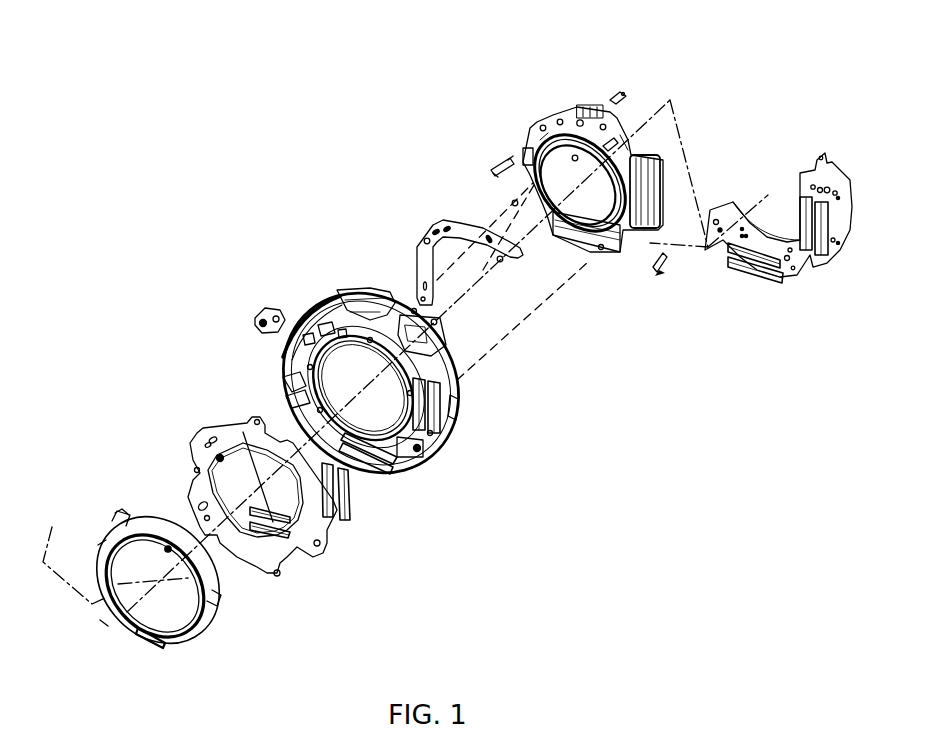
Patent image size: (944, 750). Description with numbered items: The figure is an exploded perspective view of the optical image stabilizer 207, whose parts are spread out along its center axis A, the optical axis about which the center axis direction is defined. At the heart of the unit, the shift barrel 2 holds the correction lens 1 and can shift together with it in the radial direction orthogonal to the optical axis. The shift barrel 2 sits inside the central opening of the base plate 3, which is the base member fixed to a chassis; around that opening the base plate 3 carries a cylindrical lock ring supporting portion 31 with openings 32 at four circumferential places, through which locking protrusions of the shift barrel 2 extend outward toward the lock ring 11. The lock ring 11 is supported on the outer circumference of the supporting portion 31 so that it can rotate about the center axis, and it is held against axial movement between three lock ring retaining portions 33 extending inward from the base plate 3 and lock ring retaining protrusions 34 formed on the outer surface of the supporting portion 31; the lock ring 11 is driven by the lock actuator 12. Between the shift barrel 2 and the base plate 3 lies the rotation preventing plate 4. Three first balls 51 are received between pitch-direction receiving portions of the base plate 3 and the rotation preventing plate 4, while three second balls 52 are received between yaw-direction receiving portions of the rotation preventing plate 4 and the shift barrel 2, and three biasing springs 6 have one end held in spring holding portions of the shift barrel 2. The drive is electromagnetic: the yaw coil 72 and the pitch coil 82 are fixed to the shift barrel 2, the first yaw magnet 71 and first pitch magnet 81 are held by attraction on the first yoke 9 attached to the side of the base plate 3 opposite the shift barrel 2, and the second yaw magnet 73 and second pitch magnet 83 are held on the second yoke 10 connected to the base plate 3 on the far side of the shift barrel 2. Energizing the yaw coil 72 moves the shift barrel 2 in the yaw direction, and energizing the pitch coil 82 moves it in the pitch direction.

The optical image stabilizer 207 is at (418, 100).
The center axis A is at (113, 545).
The correction lens 1 is at (588, 212).
The shift barrel 2 is at (548, 118).
The base plate 3 is at (363, 295).
The rotation preventing plate 4 is at (455, 233).
The biasing springs 6 is at (617, 92).
The first yoke 9 is at (325, 557).
The second yoke 10 is at (827, 177).
The lock ring 11 is at (215, 607).
The lock actuator 12 is at (275, 320).
The lock ring supporting portion 31 is at (330, 300).
The openings 32 is at (457, 382).
The lock ring retaining portions 33 is at (290, 350).
The lock ring retaining protrusions 34 is at (452, 428).
The first balls 51 is at (413, 262).
The second balls 52 is at (512, 203).
The first yaw magnet 71 is at (342, 497).
The yaw coil 72 is at (653, 193).
The second yaw magnet 73 is at (820, 240).
The first pitch magnet 81 is at (243, 432).
The pitch coil 82 is at (612, 247).
The second pitch magnet 83 is at (742, 278).